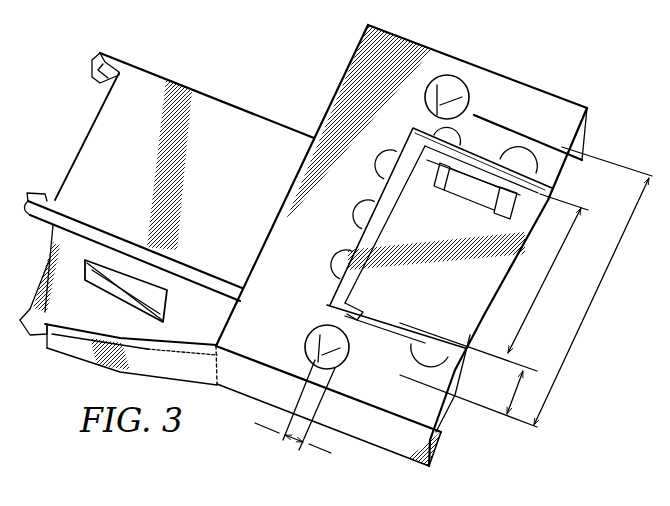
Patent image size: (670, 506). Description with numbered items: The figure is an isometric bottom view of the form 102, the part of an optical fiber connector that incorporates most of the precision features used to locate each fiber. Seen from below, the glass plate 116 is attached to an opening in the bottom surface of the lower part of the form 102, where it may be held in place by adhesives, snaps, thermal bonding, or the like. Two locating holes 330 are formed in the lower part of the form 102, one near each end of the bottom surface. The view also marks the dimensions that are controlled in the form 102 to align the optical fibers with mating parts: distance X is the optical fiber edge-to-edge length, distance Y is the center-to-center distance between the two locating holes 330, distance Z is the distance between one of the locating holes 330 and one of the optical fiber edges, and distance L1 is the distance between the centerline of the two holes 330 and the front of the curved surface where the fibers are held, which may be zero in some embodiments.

The form 102 is at (230, 122).
The glass plate 116 is at (387, 152).
The locating holes 330 is at (452, 88).
The distance L1 is at (296, 422).
The distance X is at (494, 282).
The distance Y is at (593, 286).
The distance Z is at (497, 429).